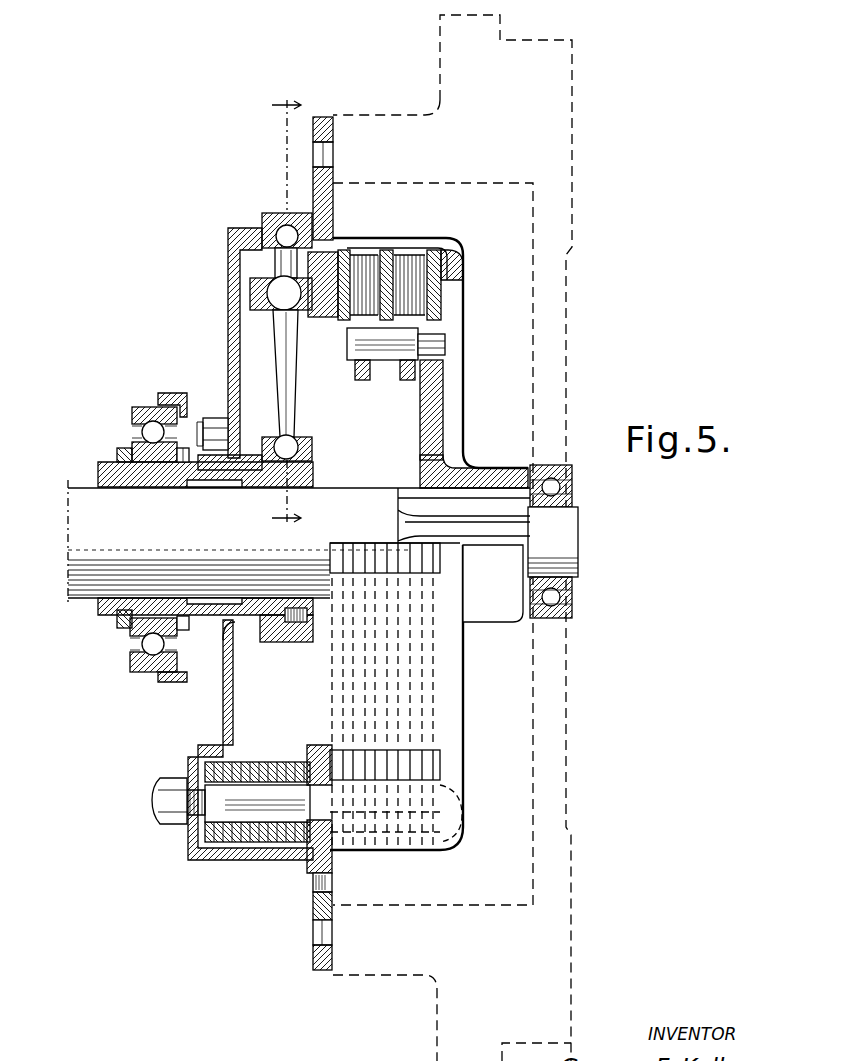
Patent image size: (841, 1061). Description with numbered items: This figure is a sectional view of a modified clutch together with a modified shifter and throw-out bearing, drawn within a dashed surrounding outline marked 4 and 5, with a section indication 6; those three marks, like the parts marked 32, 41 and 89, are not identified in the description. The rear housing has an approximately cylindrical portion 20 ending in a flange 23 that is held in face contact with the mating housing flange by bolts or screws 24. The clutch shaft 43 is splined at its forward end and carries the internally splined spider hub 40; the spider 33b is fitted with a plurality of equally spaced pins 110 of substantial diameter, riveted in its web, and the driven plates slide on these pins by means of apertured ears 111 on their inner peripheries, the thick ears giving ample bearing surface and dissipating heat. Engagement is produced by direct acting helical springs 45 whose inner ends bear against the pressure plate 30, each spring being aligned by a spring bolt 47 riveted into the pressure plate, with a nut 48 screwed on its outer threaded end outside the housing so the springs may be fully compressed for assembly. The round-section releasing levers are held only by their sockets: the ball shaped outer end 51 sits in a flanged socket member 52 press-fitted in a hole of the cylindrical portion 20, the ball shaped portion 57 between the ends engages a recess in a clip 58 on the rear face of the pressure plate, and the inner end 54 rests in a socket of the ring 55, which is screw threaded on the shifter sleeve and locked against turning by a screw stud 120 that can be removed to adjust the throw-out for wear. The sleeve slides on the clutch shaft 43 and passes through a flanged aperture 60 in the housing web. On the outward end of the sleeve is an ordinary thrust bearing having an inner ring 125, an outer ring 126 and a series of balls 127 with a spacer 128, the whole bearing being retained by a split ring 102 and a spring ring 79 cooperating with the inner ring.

The housing outline 4 is at (553, 100).
The inner housing wall 5 is at (515, 212).
The section line 6 is at (286, 312).
The cylindrical portion 20 is at (238, 232).
The flange 23 is at (310, 905).
The bolts or screws 24 is at (330, 883).
The pressure plate 30 is at (322, 320).
The pressure plate assembly 32 is at (360, 262).
The spider 33b is at (429, 544).
The spider hub 40 is at (482, 470).
The bearing 41 is at (575, 485).
The clutch shaft 43 is at (335, 500).
The helical springs 45 is at (245, 765).
The spring bolt 47 is at (248, 805).
The nut 48 is at (170, 808).
The ball shaped outer end 51 is at (287, 230).
The socket member 52 is at (275, 225).
The inner end 54 is at (292, 440).
The socket ring 55 is at (315, 452).
The ball shaped portion 57 is at (280, 303).
The clips 58 is at (258, 280).
The flanged aperture 60 is at (233, 660).
The spring ring 79 is at (186, 448).
The lower hub plate 89 is at (203, 617).
The split ring 102 is at (135, 489).
The pins 110 is at (390, 355).
The ears 111 is at (362, 380).
The screw stud 120 is at (296, 642).
The inner ring 125 is at (160, 489).
The outer ring 126 is at (165, 408).
The balls 127 is at (135, 420).
The spacer 128 is at (140, 437).